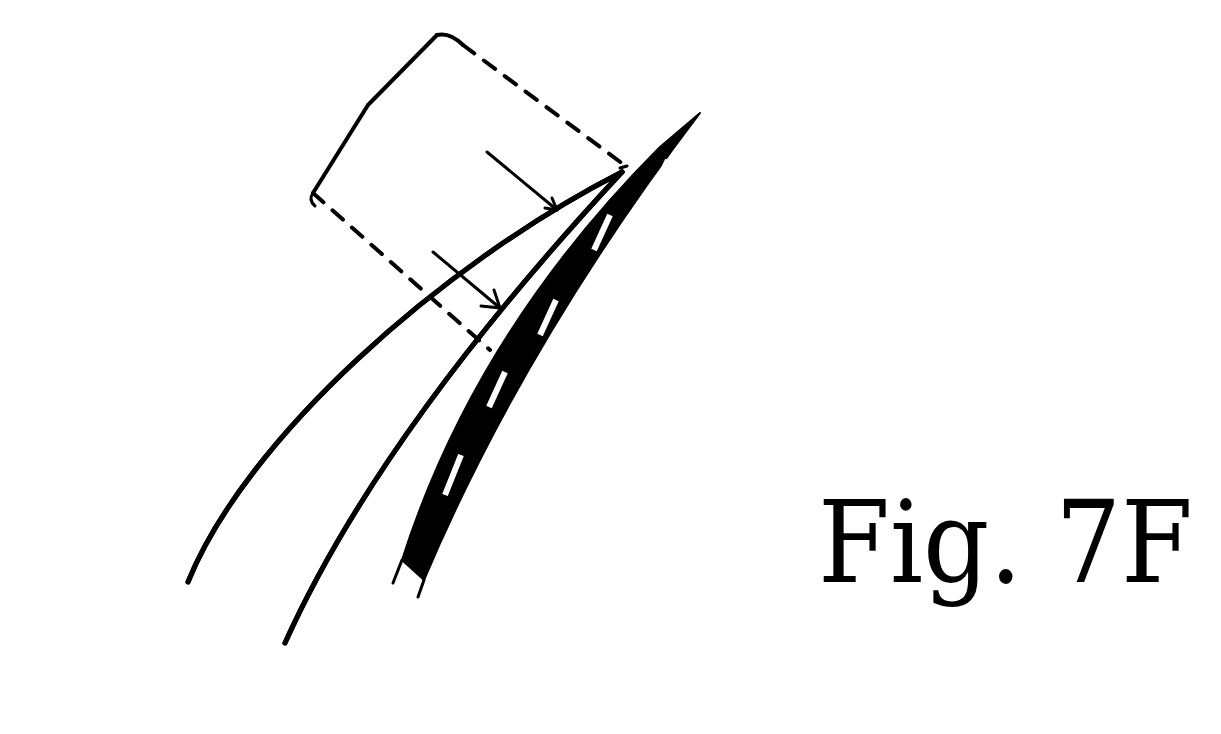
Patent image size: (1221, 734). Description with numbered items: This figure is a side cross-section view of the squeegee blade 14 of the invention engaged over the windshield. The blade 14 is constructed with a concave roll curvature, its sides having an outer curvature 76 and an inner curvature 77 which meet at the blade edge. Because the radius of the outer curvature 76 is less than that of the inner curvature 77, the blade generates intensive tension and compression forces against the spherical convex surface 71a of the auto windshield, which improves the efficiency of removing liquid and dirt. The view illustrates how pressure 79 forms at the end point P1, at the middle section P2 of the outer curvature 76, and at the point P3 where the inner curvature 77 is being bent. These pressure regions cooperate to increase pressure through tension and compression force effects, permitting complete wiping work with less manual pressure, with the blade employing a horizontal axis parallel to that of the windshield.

The squeegee blade 14 is at (283, 539).
The spherical convex surface 71a is at (691, 160).
The outer curvature 76 is at (209, 533).
The inner curvature 77 is at (328, 598).
The pressure 79 is at (368, 105).
The end point P1 is at (627, 167).
The middle section of the outer curvature P2 is at (480, 250).
The point where the inner curvature is being bent P3 is at (397, 320).